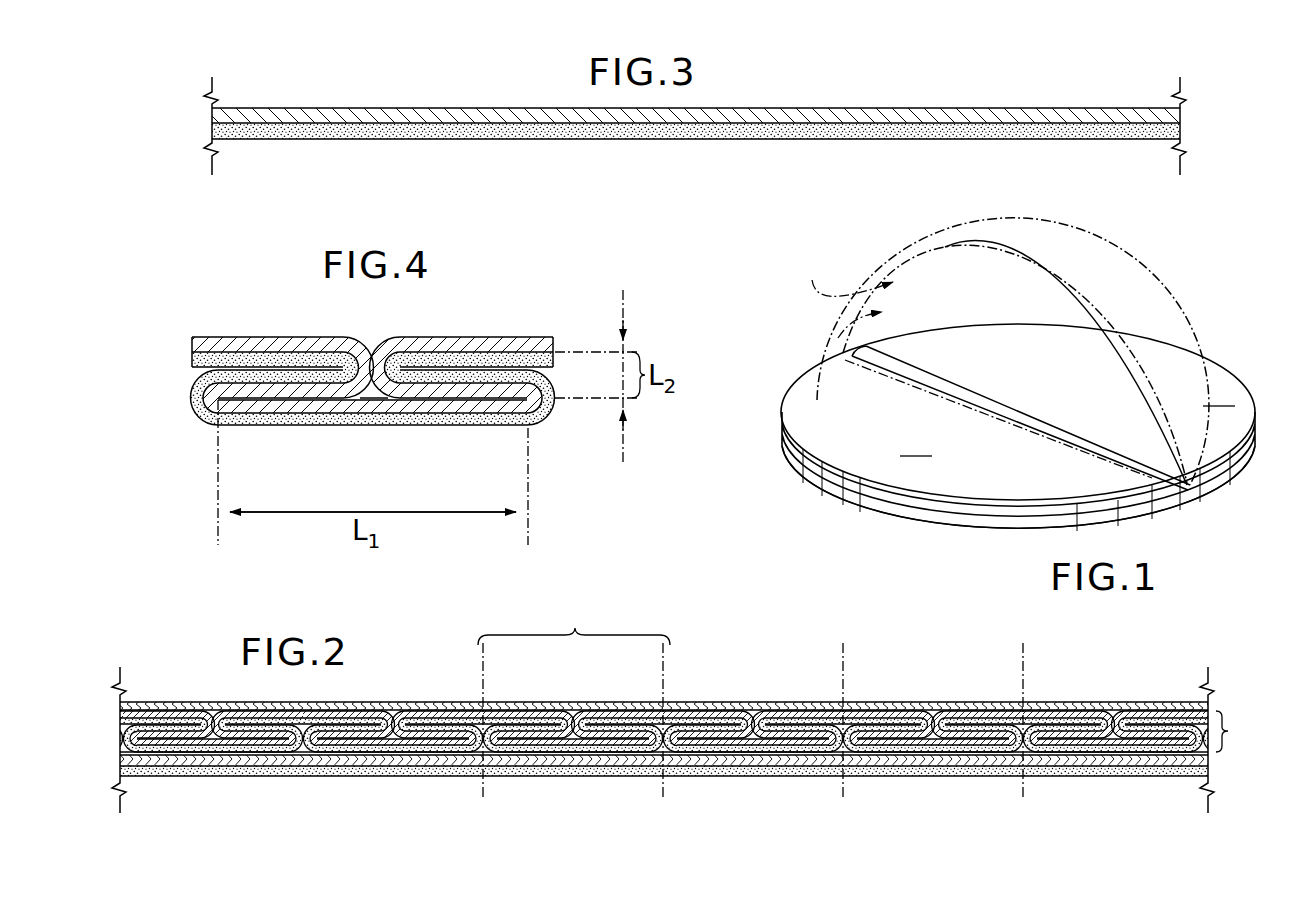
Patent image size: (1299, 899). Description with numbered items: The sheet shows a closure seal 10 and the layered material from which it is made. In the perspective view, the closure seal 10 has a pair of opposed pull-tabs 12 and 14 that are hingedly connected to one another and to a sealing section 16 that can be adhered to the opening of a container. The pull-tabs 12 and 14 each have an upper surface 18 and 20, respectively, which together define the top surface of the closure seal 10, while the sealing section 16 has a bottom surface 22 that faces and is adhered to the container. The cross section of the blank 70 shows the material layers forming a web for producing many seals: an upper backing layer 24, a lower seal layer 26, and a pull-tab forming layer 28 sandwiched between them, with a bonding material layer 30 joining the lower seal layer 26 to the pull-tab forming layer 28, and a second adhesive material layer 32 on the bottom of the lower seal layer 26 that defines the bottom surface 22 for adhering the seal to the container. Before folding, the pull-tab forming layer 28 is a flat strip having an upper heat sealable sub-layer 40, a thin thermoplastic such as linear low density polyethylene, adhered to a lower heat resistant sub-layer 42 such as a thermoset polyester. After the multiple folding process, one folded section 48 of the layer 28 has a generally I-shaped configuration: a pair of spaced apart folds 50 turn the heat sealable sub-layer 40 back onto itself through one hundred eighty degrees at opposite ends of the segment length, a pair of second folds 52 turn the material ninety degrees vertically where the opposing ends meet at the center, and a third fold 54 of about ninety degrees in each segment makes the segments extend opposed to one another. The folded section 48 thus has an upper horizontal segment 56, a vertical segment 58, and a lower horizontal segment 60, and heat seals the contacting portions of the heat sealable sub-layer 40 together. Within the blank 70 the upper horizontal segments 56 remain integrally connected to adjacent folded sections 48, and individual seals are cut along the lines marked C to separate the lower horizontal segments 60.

In FIG. 1, the closure seal 10 is at (1000, 379).
In FIG. 2, the closure seal 10 is at (767, 648).
In FIG. 1, the pull-tab 12 is at (804, 337).
In FIG. 1, the pull-tab 14 is at (1130, 243).
In FIG. 1, the sealing section 16 is at (1240, 472).
In FIG. 1, the upper surface 18 is at (1018, 412).
In FIG. 1, the upper surface 20 is at (1210, 407).
In FIG. 1, the bottom surface 22 is at (845, 505).
In FIG. 2, the upper backing layer 24 is at (1212, 700).
In FIG. 2, the lower seal layer 26 is at (1210, 767).
In FIG. 3, the pull-tab forming layer 28 is at (695, 120).
In FIG. 2, the pull-tab forming layer 28 is at (649, 731).
In FIG. 2, the bonding material layer 30 is at (1210, 756).
In FIG. 2, the adhesive material layer 32 is at (1210, 777).
In FIG. 3, the heat sealable sub-layer 40 is at (258, 112).
In FIG. 4, the heat sealable sub-layer 40 is at (530, 340).
In FIG. 3, the heat resistant sub-layer 42 is at (915, 135).
In FIG. 4, the heat resistant sub-layer 42 is at (455, 420).
In FIG. 4, the folded section 48 is at (369, 363).
In FIG. 4, the fold 50 is at (208, 400).
In FIG. 4, the second fold 52 is at (366, 400).
In FIG. 4, the third fold 54 is at (387, 347).
In FIG. 4, the upper horizontal segment 56 is at (272, 325).
In FIG. 4, the vertical segment 58 is at (405, 356).
In FIG. 4, the lower horizontal segment 60 is at (305, 430).
In FIG. 2, the blank 70 is at (649, 720).